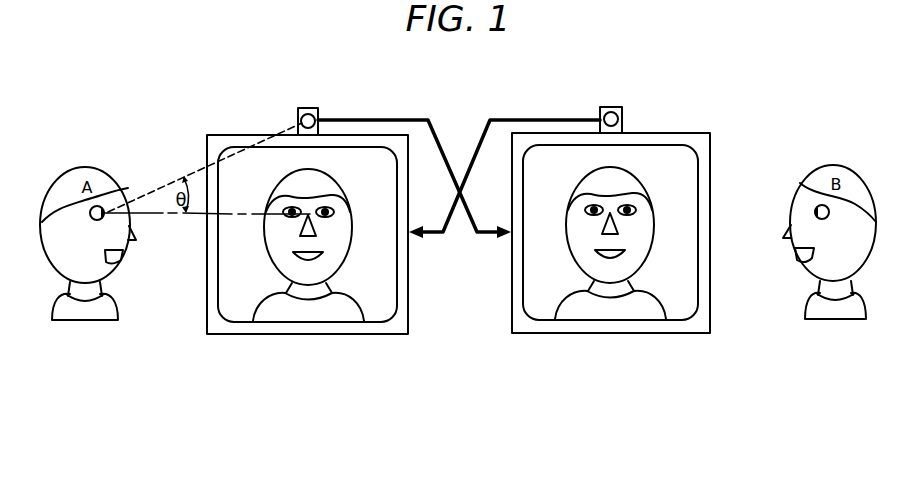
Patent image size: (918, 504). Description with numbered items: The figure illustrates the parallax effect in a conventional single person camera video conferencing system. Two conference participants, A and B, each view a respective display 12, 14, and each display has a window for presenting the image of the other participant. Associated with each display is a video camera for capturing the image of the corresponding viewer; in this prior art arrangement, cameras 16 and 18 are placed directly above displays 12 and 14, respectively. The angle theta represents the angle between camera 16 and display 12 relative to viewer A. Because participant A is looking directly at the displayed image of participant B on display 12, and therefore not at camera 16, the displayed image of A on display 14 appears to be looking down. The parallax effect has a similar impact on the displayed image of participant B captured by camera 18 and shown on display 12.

The display 12 is at (408, 310).
The display 14 is at (710, 160).
The video camera 16 is at (303, 107).
The video camera 18 is at (622, 117).